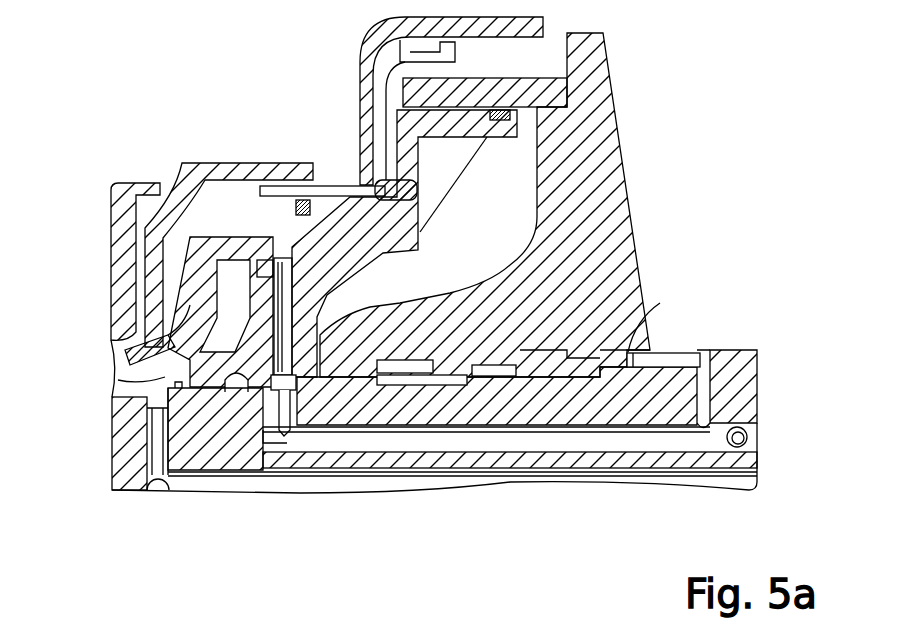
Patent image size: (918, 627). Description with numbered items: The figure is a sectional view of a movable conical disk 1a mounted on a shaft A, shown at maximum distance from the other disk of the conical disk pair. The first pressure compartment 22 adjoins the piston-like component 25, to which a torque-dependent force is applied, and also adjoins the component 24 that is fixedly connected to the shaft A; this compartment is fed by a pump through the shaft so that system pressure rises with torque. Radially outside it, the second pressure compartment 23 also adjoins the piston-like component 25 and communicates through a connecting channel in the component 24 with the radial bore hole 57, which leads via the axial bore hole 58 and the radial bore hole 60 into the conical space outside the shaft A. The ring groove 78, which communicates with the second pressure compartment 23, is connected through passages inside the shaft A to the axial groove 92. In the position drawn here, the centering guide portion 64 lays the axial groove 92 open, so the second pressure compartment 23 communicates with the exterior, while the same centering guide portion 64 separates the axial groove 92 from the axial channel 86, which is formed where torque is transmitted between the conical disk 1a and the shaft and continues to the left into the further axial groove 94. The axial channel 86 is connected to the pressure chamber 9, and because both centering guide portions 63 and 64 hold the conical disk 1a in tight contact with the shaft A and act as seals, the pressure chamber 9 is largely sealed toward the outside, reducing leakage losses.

The conical disk 1a is at (602, 187).
The pressure chamber 9 is at (503, 201).
The component 24 is at (362, 122).
The second pressure compartment 23 is at (345, 190).
The piston-like component 25 is at (190, 322).
The first pressure compartment 22 is at (157, 380).
The ring groove 78 is at (267, 387).
The radial bore hole 57 is at (287, 407).
The centering guide portion 63 is at (353, 367).
The further axial groove 94 is at (417, 383).
The axial channel 86 is at (493, 368).
The axial groove 92 is at (667, 360).
The centering guide portion 64 is at (633, 340).
The shaft A is at (747, 390).
The axial bore hole 58 is at (578, 440).
The radial bore hole 60 is at (722, 434).